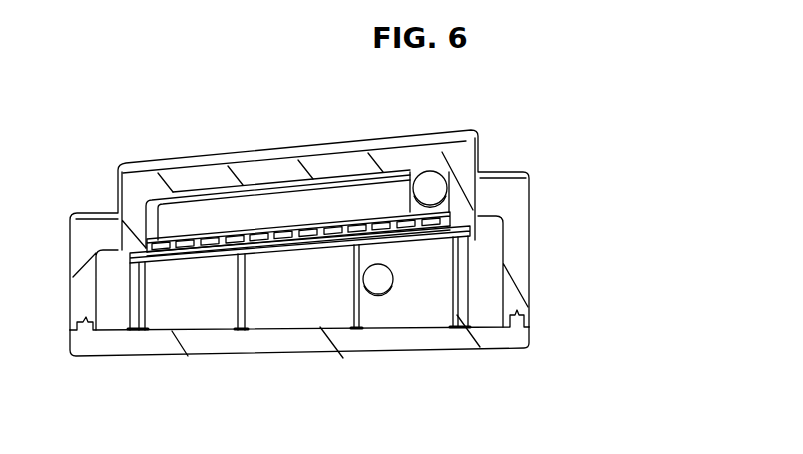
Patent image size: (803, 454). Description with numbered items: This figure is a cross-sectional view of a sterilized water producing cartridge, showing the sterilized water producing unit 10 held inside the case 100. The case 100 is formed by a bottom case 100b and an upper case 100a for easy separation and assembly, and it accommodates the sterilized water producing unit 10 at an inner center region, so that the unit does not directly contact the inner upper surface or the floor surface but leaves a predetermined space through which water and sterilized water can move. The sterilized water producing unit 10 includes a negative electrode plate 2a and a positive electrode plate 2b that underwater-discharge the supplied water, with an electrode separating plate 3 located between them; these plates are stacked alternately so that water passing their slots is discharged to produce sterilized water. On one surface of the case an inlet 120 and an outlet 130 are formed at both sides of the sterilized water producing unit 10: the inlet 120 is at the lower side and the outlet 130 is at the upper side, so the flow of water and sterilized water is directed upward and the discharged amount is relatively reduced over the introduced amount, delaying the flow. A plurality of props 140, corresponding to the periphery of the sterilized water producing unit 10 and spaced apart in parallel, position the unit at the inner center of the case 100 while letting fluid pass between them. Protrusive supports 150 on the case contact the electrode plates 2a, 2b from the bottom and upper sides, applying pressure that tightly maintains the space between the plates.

The sterilized water producing unit 10 is at (380, 195).
The negative electrode plate 2a is at (467, 212).
The electrode separating plate 3 is at (468, 224).
The positive electrode plate 2b is at (465, 230).
The outlet 130 is at (437, 193).
The inlet 120 is at (378, 286).
The prop 140 is at (142, 331).
The support 150 is at (358, 305).
The case 100 is at (377, 246).
The upper case 100a is at (299, 230).
The bottom case 100b is at (522, 332).